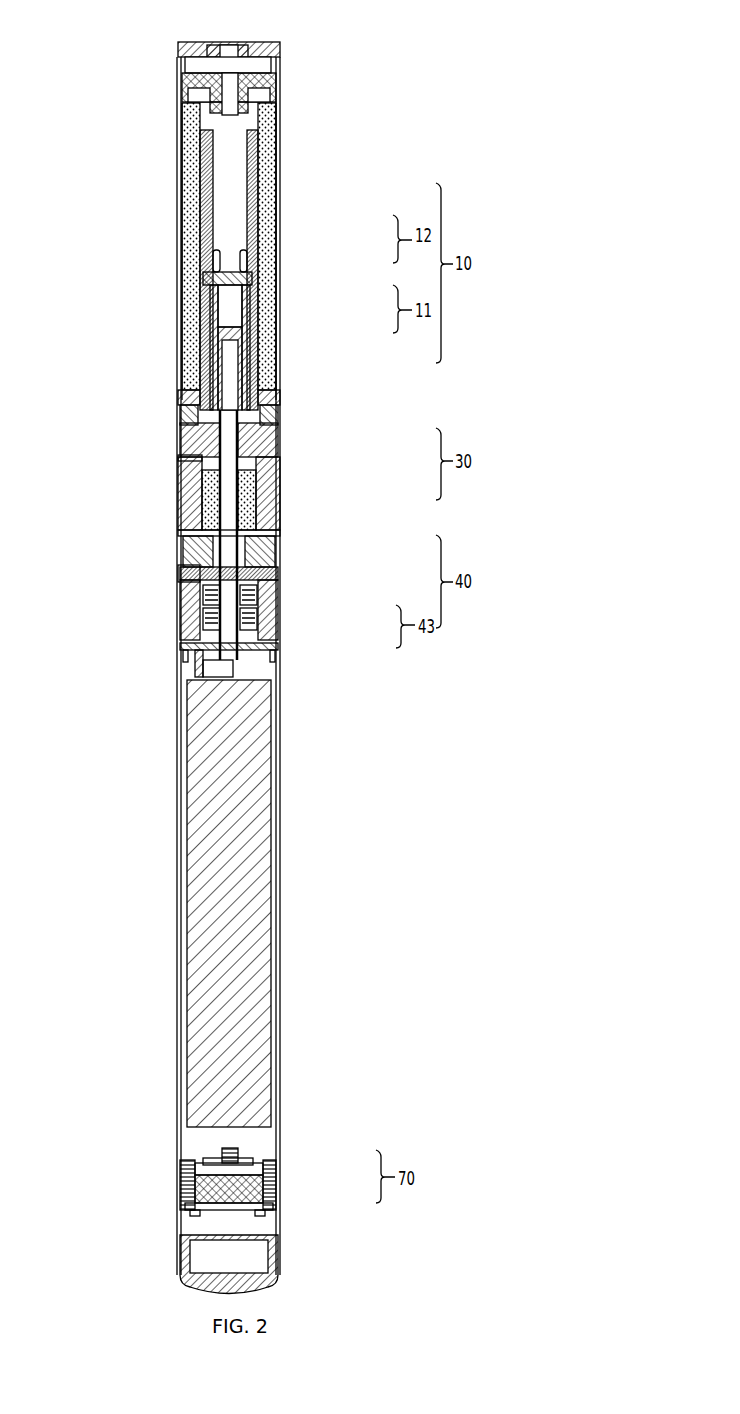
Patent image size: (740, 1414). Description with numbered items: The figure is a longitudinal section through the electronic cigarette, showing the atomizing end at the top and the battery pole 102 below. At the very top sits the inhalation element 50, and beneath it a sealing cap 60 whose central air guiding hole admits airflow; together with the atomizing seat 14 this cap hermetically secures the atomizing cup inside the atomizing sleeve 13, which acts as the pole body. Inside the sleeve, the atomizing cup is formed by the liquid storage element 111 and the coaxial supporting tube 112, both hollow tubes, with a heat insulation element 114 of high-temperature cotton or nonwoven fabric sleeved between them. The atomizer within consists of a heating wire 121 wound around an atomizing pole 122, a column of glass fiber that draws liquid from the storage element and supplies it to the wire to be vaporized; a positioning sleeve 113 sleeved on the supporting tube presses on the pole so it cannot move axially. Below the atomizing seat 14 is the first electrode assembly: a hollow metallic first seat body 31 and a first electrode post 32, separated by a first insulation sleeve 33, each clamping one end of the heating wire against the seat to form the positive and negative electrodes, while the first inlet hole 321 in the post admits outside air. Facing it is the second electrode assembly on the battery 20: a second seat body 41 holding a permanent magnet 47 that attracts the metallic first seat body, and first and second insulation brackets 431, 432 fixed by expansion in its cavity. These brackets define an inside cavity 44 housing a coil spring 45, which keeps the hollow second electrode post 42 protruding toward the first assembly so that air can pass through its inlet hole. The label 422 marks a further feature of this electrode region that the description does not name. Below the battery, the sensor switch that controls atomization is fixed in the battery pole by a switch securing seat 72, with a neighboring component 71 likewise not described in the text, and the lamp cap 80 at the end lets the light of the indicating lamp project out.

The liquid storage element 111 is at (258, 327).
The supporting tube 112 is at (250, 305).
The heating wire 121 is at (232, 268).
The atomizing pole 122 is at (250, 283).
The atomizing sleeve 13 is at (280, 190).
The atomizing seat 14 is at (280, 400).
The positioning sleeve 113 is at (258, 135).
The heat insulation element 114 is at (280, 163).
The battery 20 is at (265, 923).
The first seat body 31 is at (280, 450).
The first electrode post 32 is at (280, 522).
The first inlet hole 321 is at (178, 460).
The first insulation sleeve 33 is at (280, 477).
The second seat body 41 is at (280, 545).
The second electrode post 42 is at (280, 580).
The plate edge 422 is at (178, 567).
The first insulation bracket 431 is at (280, 600).
The second insulation bracket 432 is at (280, 627).
The inside cavity 44 is at (178, 640).
The coil spring 45 is at (178, 612).
The permanent magnet 47 is at (178, 535).
The inhalation element 50 is at (252, 42).
The sealing cap 60 is at (280, 75).
The indicator element 71 is at (274, 1195).
The switch securing seat 72 is at (274, 1170).
The lamp cap 80 is at (280, 1278).
The battery pole 102 is at (178, 1055).